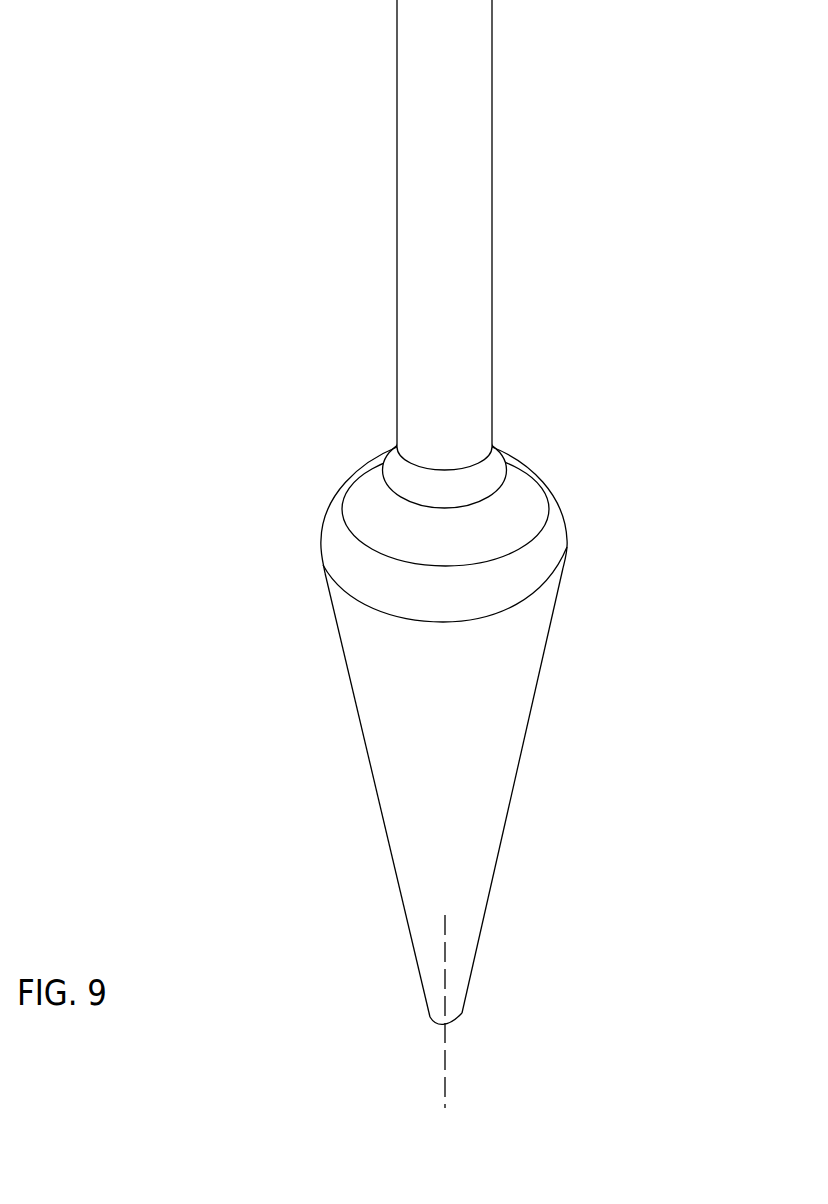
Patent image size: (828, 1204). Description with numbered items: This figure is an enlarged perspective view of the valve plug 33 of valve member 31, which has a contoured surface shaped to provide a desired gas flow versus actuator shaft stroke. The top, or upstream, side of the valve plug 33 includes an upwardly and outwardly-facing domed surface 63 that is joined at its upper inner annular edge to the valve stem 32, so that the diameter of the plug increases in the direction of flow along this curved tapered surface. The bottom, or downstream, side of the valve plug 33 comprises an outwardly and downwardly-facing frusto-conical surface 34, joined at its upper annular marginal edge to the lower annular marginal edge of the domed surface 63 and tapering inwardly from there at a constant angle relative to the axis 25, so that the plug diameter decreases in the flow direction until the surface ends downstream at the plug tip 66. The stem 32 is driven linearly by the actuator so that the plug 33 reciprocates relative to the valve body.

The valve member 31 is at (283, 186).
The valve stem 32 is at (470, 145).
The valve plug 33 is at (526, 837).
The frusto-conical surface 34 is at (520, 762).
The domed surface 63 is at (542, 552).
The plug tip 66 is at (448, 1023).
The axis 25 is at (443, 1092).